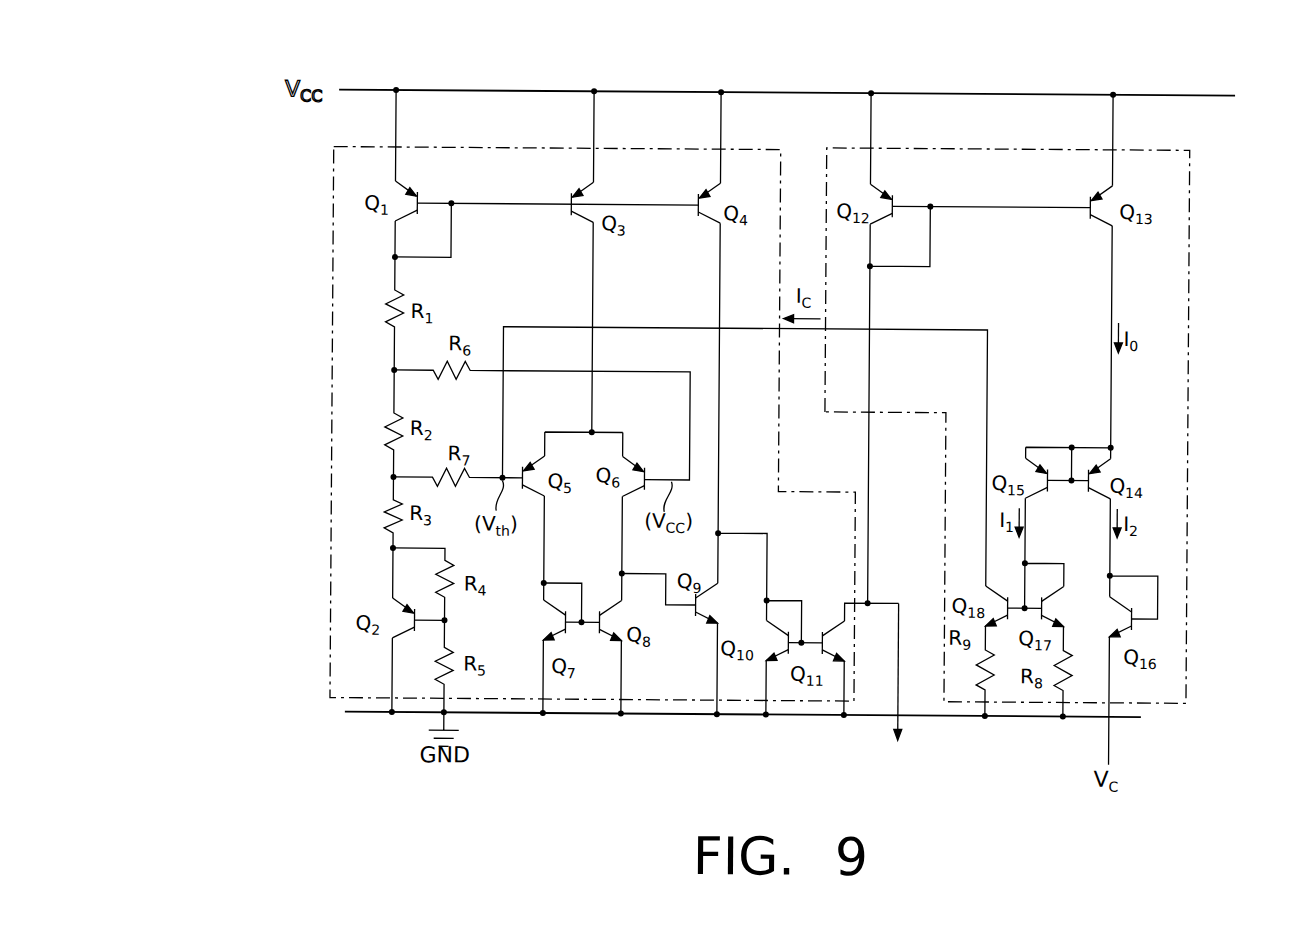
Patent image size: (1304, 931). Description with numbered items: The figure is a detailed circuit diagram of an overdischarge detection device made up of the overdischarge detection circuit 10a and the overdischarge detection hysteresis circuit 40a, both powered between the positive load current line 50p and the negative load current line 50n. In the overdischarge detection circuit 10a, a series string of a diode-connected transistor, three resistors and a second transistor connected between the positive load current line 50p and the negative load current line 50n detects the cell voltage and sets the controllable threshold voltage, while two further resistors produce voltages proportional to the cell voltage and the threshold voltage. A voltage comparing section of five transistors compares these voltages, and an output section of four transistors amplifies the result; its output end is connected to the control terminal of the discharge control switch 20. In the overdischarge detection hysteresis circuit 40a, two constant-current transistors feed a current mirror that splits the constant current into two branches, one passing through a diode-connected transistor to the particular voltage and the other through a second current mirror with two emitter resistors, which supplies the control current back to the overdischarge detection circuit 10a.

The positive load current line 50p is at (464, 90).
The negative load current line 50n is at (576, 715).
The overdischarge detection circuit 10a is at (332, 526).
The overdischarge detection hysteresis circuit 40a is at (1190, 448).
The discharge control switch 20 is at (902, 683).